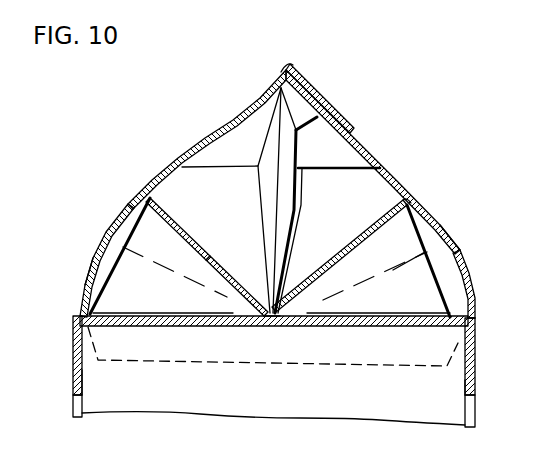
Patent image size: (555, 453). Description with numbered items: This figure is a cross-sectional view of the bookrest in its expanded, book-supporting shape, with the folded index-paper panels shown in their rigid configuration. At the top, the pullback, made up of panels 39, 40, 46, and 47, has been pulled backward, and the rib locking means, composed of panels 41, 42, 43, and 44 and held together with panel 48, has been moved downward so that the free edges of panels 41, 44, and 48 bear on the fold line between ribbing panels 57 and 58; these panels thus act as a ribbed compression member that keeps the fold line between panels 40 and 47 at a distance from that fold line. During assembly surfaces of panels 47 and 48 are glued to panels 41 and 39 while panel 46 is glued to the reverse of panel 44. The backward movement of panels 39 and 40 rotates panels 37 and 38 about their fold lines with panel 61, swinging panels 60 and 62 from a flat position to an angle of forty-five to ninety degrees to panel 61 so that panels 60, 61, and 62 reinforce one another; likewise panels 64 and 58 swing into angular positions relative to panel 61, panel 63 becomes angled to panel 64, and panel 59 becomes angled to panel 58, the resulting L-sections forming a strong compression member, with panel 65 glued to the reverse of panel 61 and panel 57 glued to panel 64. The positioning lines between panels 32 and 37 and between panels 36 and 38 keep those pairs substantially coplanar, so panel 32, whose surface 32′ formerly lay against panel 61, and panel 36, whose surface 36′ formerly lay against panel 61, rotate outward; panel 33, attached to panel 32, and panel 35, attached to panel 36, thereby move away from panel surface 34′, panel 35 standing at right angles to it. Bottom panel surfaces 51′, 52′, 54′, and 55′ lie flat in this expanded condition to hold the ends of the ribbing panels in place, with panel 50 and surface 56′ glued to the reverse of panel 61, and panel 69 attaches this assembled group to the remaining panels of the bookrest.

The panel 32 is at (478, 371).
The panel surface 32′ is at (459, 396).
The panel 33 is at (474, 414).
The panel surface 34′ is at (290, 400).
The panel 35 is at (73, 406).
The panel 36 is at (74, 362).
The panel surface 36′ is at (88, 380).
The panel 37 is at (473, 284).
The panel 38 is at (86, 269).
The pullback panel 39 is at (373, 155).
The pullback panel 40 is at (197, 147).
The rib locking panel 41 is at (297, 194).
The rib locking panel 42 is at (330, 159).
The rib locking panel 43 is at (246, 154).
The rib locking panel 44 is at (262, 200).
The pullback panel 46 is at (300, 110).
The pullback panel 47 is at (340, 120).
The rib locking panel 48 is at (283, 233).
The panel 50 is at (386, 317).
The panel surface 51′ is at (407, 298).
The panel surface 52′ is at (395, 264).
The panel surface 54′ is at (182, 252).
The panel surface 55′ is at (150, 291).
The panel surface 56′ is at (200, 306).
The ribbing panel 57 is at (262, 302).
The ribbing panel 58 is at (366, 238).
The ribbing panel 59 is at (441, 237).
The ribbing panel 60 is at (470, 307).
The base panel 61 is at (255, 328).
The ribbing panel 62 is at (82, 289).
The ribbing panel 63 is at (113, 231).
The ribbing panel 64 is at (197, 224).
The ribbing panel 65 is at (276, 318).
The panel 69 is at (156, 367).